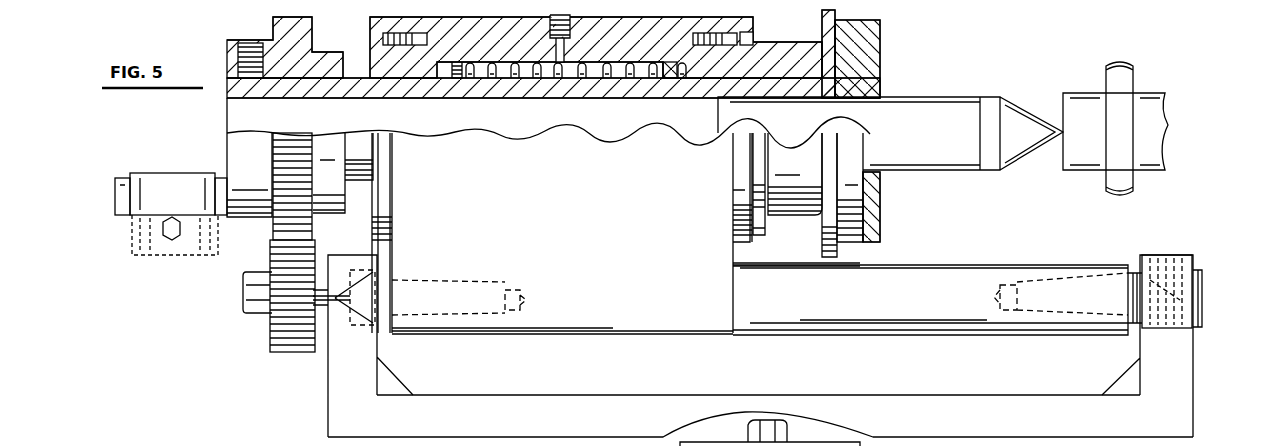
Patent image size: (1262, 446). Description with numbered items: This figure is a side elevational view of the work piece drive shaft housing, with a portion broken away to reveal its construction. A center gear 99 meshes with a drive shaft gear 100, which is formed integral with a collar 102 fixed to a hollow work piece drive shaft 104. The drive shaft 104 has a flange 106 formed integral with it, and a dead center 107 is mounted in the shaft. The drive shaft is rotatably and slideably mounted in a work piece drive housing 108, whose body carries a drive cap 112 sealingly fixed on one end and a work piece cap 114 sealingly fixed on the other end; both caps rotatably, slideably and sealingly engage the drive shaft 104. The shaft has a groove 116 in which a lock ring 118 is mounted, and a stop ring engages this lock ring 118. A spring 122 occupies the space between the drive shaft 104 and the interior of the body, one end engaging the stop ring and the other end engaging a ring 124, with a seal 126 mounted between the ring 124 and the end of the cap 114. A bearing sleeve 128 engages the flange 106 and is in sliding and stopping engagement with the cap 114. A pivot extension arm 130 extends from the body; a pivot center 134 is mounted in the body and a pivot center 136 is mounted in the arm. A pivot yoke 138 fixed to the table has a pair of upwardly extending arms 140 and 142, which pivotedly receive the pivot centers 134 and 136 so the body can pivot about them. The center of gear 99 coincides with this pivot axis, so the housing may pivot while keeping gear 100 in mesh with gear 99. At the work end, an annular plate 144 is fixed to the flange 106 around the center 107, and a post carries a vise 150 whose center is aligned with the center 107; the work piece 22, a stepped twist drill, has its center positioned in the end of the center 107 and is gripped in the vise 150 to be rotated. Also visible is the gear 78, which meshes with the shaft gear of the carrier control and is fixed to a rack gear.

The work piece 22 is at (1160, 162).
The gear 78 is at (115, 193).
The center gear 99 is at (285, 333).
The drive shaft gear 100 is at (287, 220).
The collar 102 is at (240, 144).
The work piece drive shaft 104 is at (557, 88).
The flange 106 is at (878, 44).
The dead center 107 is at (935, 107).
The work piece drive housing 108 is at (738, 250).
The drive cap 112 is at (395, 160).
The work piece cap 114 is at (733, 207).
The groove 116 is at (458, 73).
The lock ring 118 is at (467, 75).
The spring 122 is at (590, 72).
The ring 124 is at (667, 76).
The seal 126 is at (680, 80).
The bearing sleeve 128 is at (800, 197).
The pivot extension arm 130 is at (908, 303).
The pivot center 134 is at (400, 267).
The pivot center 136 is at (1128, 302).
The pivot yoke 138 is at (587, 402).
The arm 140 is at (340, 367).
The arm 142 is at (1180, 363).
The annular plate 144 is at (877, 73).
The vise 150 is at (1112, 157).